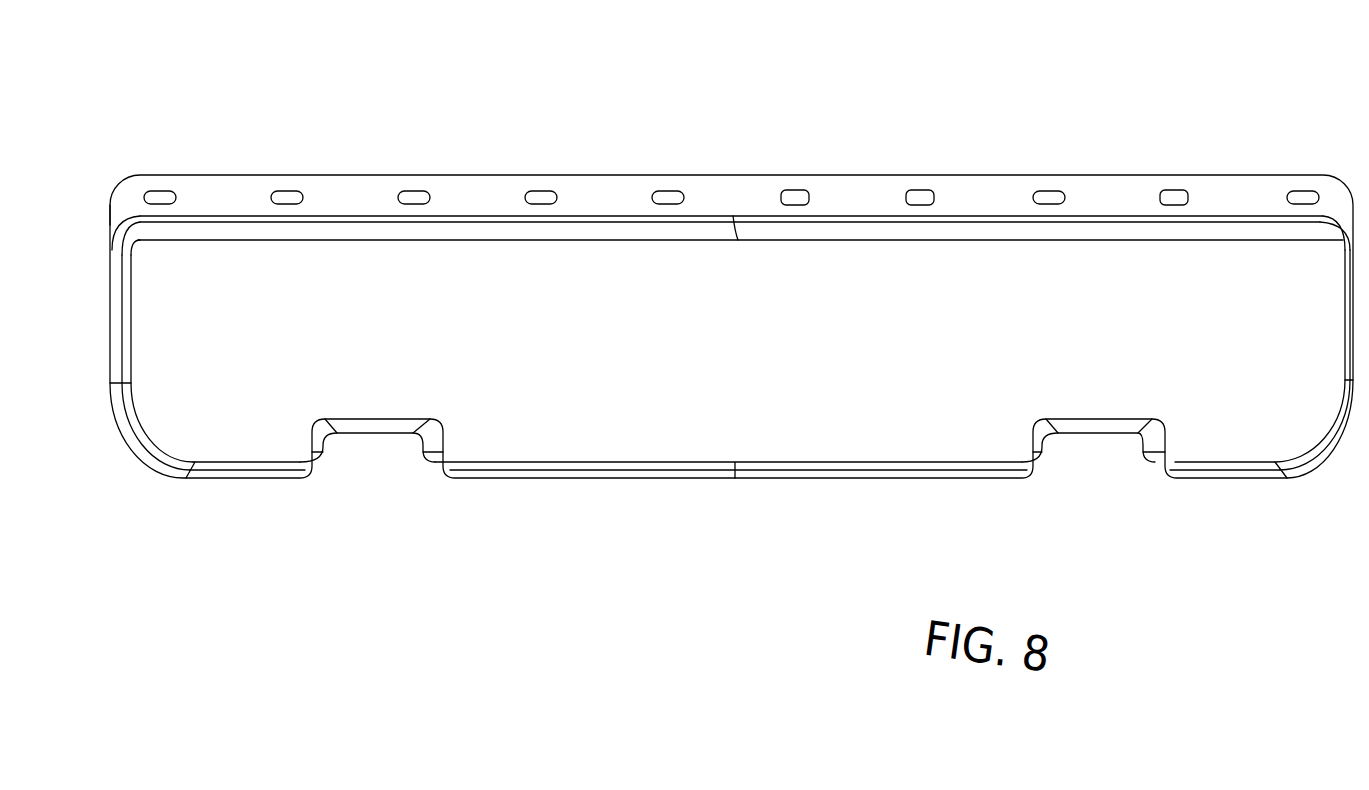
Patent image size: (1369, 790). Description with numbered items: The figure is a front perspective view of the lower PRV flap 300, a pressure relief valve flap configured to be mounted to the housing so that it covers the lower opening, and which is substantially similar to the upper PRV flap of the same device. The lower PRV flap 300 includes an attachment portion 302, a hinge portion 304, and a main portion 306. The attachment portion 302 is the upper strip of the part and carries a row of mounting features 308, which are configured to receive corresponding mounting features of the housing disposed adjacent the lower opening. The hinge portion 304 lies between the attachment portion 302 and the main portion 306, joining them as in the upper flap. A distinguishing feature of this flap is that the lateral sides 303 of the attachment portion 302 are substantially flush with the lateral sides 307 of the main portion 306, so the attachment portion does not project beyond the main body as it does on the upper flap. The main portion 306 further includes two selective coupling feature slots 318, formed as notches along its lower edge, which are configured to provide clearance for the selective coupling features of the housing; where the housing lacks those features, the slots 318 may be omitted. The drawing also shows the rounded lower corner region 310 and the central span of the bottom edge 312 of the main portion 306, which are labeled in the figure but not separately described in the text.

The lower PRV flap 300 is at (701, 315).
The attachment portion 302 is at (731, 157).
The lateral sides of the attachment portion 303 is at (100, 187).
The hinge portion 304 is at (731, 185).
The main portion 306 is at (247, 472).
The lateral sides of the main portion 307 is at (701, 318).
The mounting features 308 is at (984, 149).
The rounded corner 310 is at (714, 440).
The bottom wall 312 is at (857, 491).
The selective coupling feature slots 318 is at (732, 484).